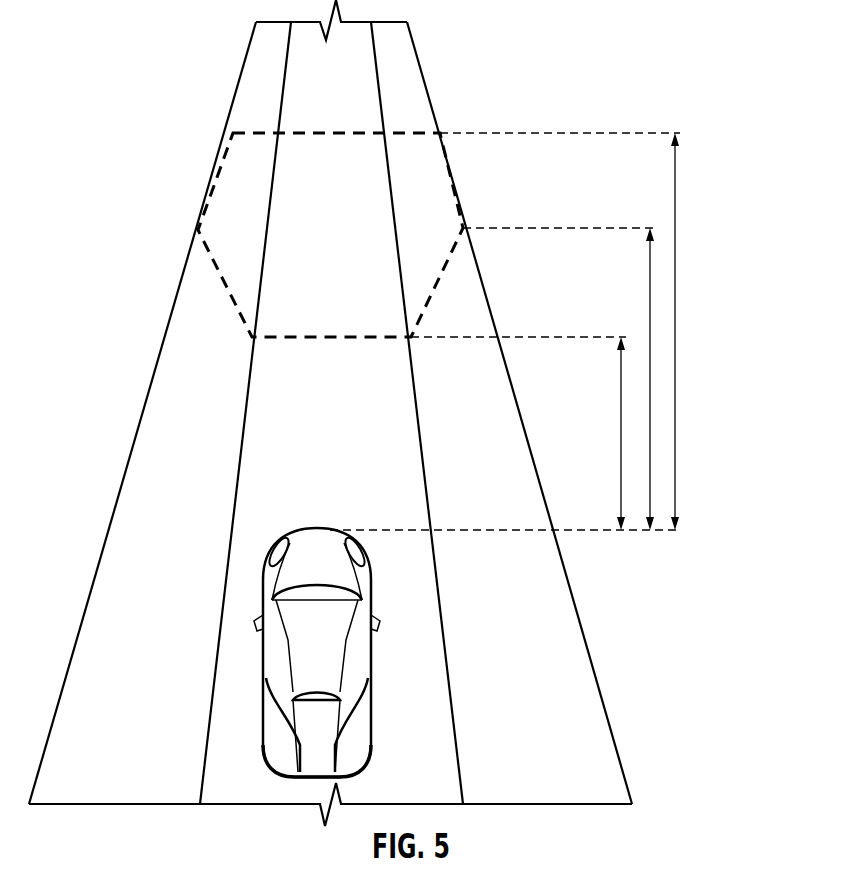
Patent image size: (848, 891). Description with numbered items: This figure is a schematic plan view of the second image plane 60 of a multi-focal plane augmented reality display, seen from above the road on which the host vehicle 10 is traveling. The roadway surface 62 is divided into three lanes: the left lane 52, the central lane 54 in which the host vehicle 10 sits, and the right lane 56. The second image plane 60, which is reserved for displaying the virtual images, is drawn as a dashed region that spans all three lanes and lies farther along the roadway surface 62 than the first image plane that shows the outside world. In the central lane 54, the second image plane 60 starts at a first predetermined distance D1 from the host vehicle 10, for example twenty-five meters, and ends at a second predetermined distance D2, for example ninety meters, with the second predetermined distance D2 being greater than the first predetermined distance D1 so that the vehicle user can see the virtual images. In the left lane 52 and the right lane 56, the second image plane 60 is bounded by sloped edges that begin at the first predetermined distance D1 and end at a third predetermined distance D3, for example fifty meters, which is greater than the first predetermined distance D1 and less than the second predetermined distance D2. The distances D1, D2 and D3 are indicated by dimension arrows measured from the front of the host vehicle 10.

The host vehicle 10 is at (296, 572).
The left lane 52 is at (160, 437).
The central lane 54 is at (395, 488).
The right lane 56 is at (495, 412).
The second image plane 60 is at (247, 130).
The roadway surface 62 is at (307, 405).
The first predetermined distance D1 is at (622, 437).
The second predetermined distance D2 is at (675, 245).
The third predetermined distance D3 is at (650, 360).